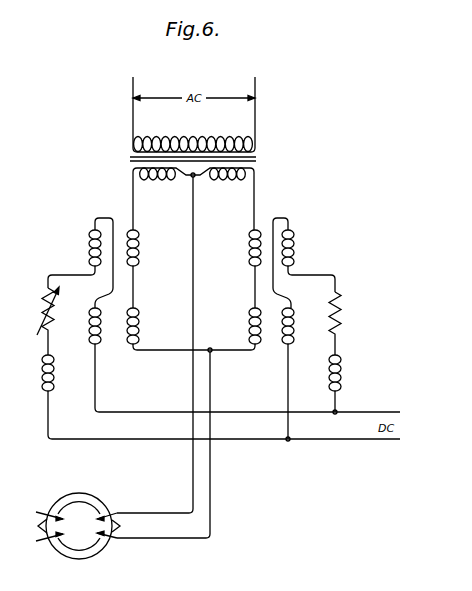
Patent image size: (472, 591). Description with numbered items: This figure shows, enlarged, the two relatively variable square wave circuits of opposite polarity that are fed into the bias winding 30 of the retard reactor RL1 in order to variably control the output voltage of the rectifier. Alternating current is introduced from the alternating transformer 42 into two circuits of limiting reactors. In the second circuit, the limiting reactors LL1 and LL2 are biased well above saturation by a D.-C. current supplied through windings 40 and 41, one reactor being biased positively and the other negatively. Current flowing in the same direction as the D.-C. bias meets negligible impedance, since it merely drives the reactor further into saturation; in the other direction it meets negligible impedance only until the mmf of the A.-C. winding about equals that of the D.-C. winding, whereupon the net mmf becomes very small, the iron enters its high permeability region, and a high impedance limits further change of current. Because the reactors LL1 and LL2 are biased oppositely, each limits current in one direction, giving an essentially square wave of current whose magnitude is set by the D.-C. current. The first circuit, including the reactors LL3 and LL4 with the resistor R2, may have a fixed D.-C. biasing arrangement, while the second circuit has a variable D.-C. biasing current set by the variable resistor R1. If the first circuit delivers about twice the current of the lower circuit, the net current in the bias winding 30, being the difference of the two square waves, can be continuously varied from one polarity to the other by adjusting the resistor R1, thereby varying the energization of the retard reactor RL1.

The bias winding 30 is at (118, 527).
The winding 40 is at (89, 337).
The winding 41 is at (89, 247).
The alternating transformer 42 is at (258, 159).
The variable resistor R1 is at (44, 305).
The resistor R2 is at (342, 313).
The limiting reactor LL1 is at (139, 329).
The limiting reactor LL2 is at (139, 248).
The limiting reactor LL3 is at (249, 328).
The limiting reactor LL4 is at (249, 248).
The retard reactor RL1 is at (79, 518).